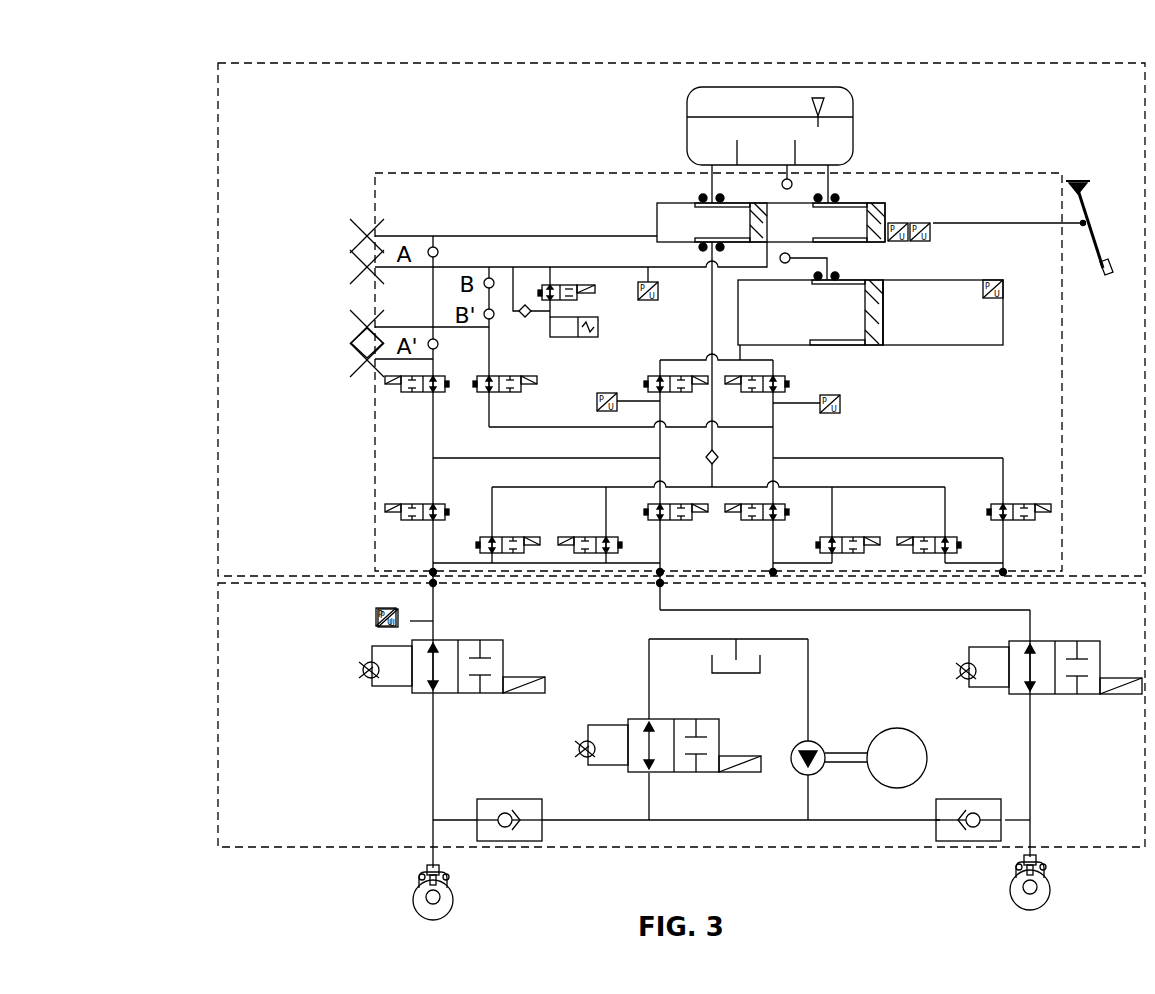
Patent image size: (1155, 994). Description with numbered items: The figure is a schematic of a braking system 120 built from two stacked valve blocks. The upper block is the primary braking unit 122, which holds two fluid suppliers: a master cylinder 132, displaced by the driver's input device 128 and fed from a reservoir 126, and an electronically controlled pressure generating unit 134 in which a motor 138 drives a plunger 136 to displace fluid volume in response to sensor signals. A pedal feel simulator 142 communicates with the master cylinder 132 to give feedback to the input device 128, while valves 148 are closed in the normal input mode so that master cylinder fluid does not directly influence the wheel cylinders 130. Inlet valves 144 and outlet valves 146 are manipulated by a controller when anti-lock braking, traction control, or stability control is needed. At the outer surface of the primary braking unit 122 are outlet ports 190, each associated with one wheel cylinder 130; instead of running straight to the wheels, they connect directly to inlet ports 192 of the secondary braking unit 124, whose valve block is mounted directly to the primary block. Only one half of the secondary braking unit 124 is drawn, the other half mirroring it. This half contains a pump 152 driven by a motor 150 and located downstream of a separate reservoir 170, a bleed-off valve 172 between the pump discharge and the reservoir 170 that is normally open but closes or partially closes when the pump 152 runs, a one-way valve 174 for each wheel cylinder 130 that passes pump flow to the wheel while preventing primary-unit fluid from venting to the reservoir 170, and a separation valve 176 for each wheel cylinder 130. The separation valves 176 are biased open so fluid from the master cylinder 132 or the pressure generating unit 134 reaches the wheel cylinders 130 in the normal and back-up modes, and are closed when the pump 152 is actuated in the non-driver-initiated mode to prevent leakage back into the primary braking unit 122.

The braking system 120 is at (428, 48).
The primary braking unit 122 is at (568, 172).
The secondary braking unit 124 is at (218, 685).
The reservoir 126 is at (852, 107).
The input device 128 is at (1102, 296).
The wheel cylinders 130 is at (452, 878).
The master cylinder 132 is at (657, 222).
The electronically controlled pressure generating unit 134 is at (897, 332).
The plunger 136 is at (848, 347).
The motor 138 is at (958, 347).
The pedal feel simulator 142 is at (598, 330).
The inlet valves 144 is at (400, 518).
The outlet valves 146 is at (505, 537).
The valves 148 is at (398, 388).
The motor 150 is at (928, 755).
The pump 152 is at (820, 742).
The reservoir 170 is at (735, 675).
The bleed-off valve 172 is at (710, 775).
The one-way valve 174 is at (505, 798).
The separation valve 176 is at (503, 645).
The outlet ports 190 is at (433, 572).
The inlet ports 192 is at (433, 583).